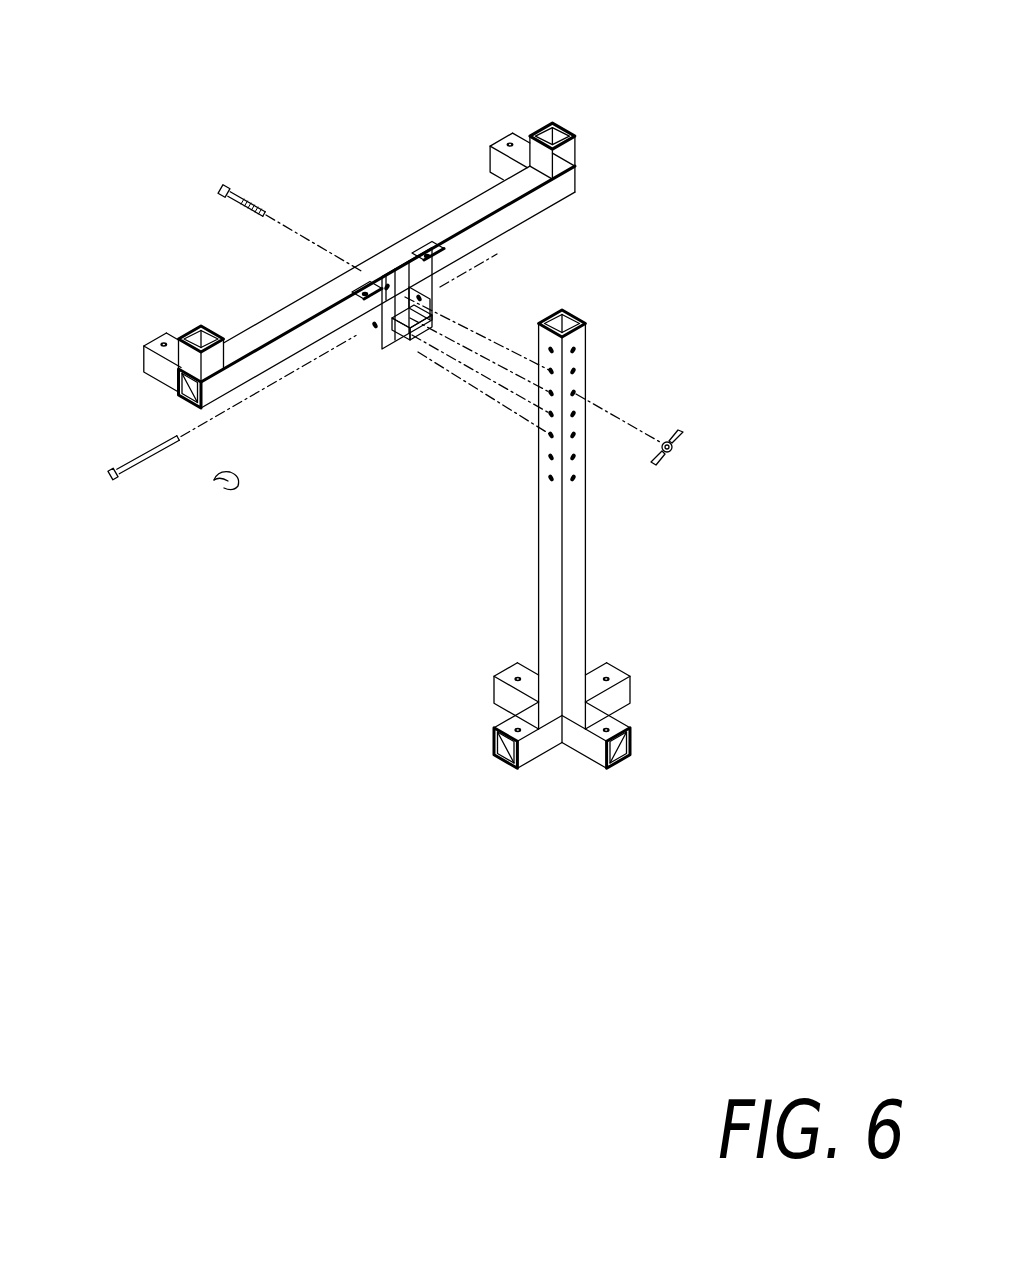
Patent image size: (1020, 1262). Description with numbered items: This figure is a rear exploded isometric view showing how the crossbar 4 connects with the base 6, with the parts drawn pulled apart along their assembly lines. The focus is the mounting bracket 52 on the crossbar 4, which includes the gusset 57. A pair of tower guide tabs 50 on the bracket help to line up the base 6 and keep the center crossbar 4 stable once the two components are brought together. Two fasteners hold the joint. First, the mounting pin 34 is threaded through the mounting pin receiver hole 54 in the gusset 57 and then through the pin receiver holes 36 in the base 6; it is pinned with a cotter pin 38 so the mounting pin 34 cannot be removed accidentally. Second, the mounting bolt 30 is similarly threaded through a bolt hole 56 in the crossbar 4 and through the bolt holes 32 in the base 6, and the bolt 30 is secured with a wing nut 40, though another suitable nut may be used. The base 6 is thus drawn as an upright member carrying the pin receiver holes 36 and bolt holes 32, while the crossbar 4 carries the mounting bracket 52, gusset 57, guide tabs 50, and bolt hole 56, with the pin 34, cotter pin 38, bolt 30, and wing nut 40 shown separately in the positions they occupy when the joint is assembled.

The crossbar 4 is at (593, 114).
The base 6 is at (672, 583).
The mounting bolt 30 is at (220, 187).
The bolt holes 32 is at (576, 371).
The mounting pin 34 is at (110, 468).
The pin receiver holes 36 is at (548, 370).
The cotter pin 38 is at (228, 478).
The wing nut 40 is at (673, 438).
The tower guide tabs 50 is at (410, 334).
The mounting bracket 52 is at (488, 290).
The mounting pin receiver hole 54 is at (376, 329).
The bolt hole 56 is at (388, 284).
The gusset 57 is at (358, 296).